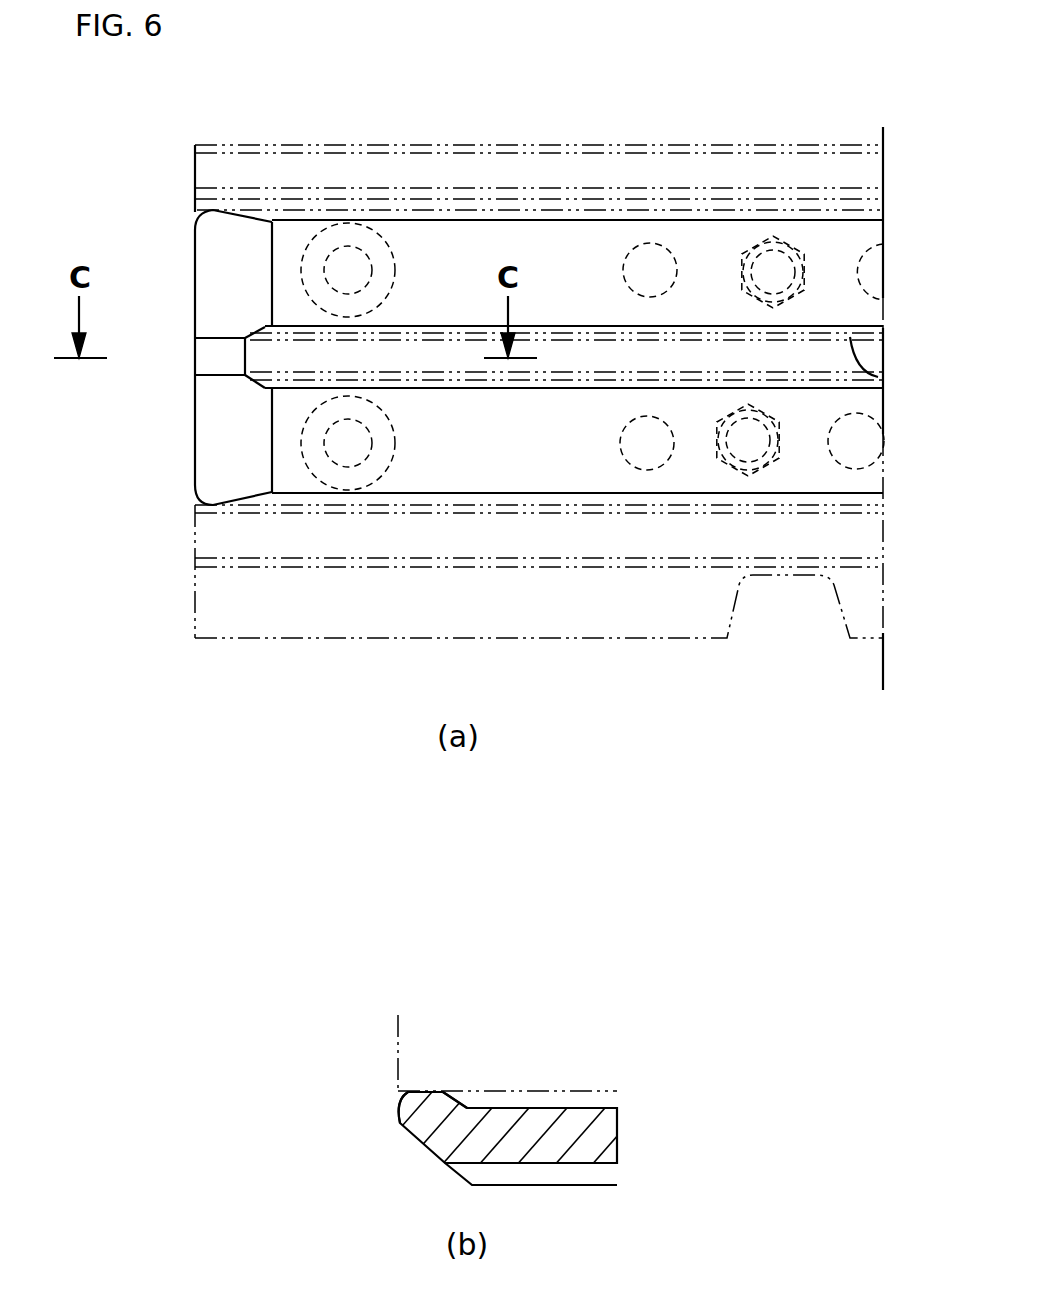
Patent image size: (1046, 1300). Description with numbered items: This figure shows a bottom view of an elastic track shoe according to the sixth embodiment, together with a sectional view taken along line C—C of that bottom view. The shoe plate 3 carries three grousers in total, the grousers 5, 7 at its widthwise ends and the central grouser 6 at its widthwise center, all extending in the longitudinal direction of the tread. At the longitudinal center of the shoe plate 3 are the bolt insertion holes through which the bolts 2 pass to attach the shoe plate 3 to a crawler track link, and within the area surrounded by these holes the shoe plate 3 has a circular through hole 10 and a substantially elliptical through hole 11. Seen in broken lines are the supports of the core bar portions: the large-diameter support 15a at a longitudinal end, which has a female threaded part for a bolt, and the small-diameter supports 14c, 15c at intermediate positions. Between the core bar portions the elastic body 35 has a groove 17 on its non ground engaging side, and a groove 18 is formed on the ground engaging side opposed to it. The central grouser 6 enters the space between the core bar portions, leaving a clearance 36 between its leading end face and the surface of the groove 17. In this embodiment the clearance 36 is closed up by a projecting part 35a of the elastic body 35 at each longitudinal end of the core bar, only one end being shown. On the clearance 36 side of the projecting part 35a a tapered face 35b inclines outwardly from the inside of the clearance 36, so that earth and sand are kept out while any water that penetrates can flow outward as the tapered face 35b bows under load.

The bolt 2 is at (788, 252).
The shoe plate 3 is at (549, 145).
The grouser 5 is at (721, 150).
The central grouser 6 is at (208, 362).
The grouser 7 is at (356, 565).
The circular through hole 10 is at (885, 268).
The substantially elliptical through hole 11 is at (883, 463).
The support 14c is at (650, 243).
The support 15a is at (396, 441).
The support 15c is at (622, 423).
The groove 17 is at (582, 1108).
The groove 18 is at (878, 377).
The elastic body 35 is at (600, 482).
The projecting part 35a is at (413, 1102).
The tapered face 35b is at (453, 1093).
The clearance 36 is at (538, 1092).